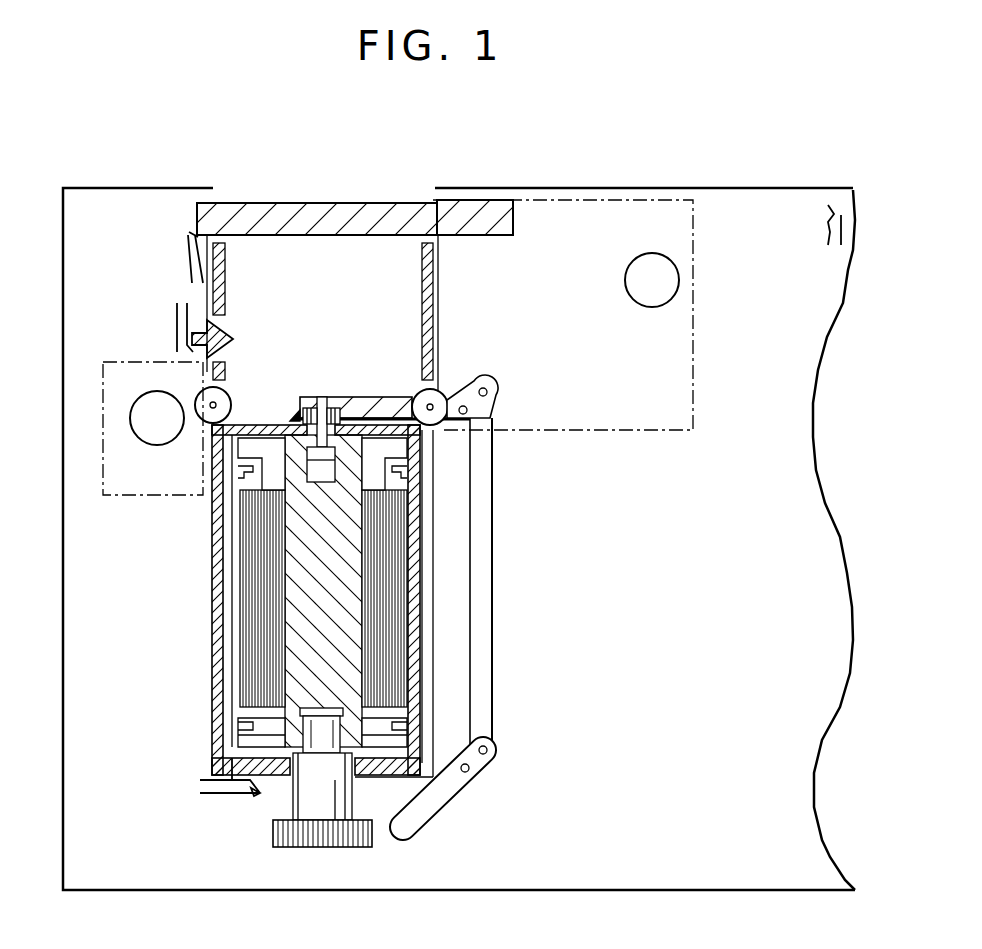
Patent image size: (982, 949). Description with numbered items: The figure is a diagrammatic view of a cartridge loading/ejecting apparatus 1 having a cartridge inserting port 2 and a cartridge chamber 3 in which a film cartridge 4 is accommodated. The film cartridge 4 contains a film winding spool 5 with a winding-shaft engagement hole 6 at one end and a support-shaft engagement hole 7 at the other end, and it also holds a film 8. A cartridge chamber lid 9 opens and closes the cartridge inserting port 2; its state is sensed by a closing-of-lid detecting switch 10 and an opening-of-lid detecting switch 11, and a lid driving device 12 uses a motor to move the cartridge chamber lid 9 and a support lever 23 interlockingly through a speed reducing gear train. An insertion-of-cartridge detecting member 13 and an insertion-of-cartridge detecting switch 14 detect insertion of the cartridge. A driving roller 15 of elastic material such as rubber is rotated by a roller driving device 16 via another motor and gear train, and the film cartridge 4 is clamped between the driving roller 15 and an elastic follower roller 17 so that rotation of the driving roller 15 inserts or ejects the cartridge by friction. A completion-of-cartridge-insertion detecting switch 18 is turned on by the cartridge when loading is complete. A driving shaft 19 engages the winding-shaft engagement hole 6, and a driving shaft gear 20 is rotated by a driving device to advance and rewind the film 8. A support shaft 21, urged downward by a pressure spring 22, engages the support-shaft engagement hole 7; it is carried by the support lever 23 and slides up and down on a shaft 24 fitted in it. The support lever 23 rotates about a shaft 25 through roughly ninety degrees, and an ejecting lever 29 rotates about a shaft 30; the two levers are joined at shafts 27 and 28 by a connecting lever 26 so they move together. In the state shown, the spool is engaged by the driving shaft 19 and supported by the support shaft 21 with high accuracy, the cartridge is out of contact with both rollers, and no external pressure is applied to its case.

The cartridge loading/ejecting apparatus 1 is at (108, 188).
The cartridge inserting port 2 is at (313, 196).
The cartridge chamber 3 is at (217, 694).
The film cartridge 4 is at (258, 445).
The film winding spool 5 is at (262, 470).
The winding-shaft engagement hole 6 is at (336, 712).
The support-shaft engagement hole 7 is at (421, 503).
The film 8 is at (253, 590).
The cartridge chamber lid 9 is at (476, 228).
The closing-of-lid detecting switch 10 is at (190, 262).
The opening-of-lid detecting switch 11 is at (831, 248).
The lid driving device 12 is at (695, 350).
The insertion-of-cartridge detecting member 13 is at (226, 338).
The insertion-of-cartridge detecting switch 14 is at (178, 322).
The driving roller 15 is at (204, 399).
The roller driving device 16 is at (122, 497).
The follower roller 17 is at (439, 398).
The completion-of-cartridge-insertion detecting switch 18 is at (217, 791).
The driving shaft 19 is at (297, 740).
The driving shaft gear 20 is at (293, 850).
The support shaft 21 is at (296, 408).
The pressure spring 22 is at (353, 398).
The support lever 23 is at (383, 400).
The shaft 24 is at (316, 402).
The shaft 25 is at (468, 413).
The connecting lever 26 is at (487, 577).
The shaft 27 is at (487, 388).
The shaft 28 is at (490, 752).
The ejecting lever 29 is at (441, 803).
The shaft 30 is at (470, 773).